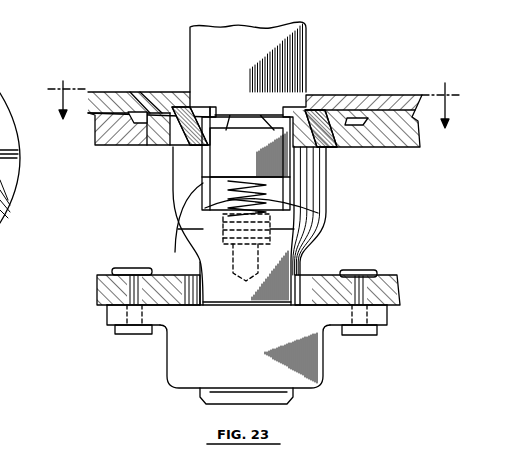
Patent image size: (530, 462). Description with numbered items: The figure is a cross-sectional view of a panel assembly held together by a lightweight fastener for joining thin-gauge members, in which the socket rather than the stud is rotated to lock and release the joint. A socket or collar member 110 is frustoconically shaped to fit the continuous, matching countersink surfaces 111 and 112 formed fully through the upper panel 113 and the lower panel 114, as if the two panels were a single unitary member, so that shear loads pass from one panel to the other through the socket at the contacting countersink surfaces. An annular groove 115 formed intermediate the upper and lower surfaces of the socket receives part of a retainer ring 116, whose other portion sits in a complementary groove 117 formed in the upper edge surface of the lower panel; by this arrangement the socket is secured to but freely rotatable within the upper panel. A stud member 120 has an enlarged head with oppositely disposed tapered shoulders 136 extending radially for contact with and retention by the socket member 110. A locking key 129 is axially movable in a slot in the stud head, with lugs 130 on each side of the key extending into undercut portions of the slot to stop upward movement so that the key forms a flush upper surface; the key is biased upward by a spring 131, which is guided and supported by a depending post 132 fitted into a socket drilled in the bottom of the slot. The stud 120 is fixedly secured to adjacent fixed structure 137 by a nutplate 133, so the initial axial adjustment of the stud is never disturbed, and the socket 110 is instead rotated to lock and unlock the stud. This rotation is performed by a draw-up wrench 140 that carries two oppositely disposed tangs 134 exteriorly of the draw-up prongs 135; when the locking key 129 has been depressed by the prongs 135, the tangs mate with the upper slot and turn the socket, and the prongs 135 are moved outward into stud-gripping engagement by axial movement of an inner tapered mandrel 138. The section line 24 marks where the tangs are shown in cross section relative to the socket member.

The section line 24 is at (50, 79).
The socket member 110 is at (312, 100).
The countersink surface 111 is at (143, 100).
The countersink surface 112 is at (150, 146).
The upper panel 113 is at (110, 100).
The lower panel 114 is at (95, 131).
The annular groove 115 is at (362, 118).
The retainer ring 116 is at (367, 123).
The complementary groove 117 is at (123, 146).
The stud member 120 is at (296, 265).
The locking key 129 is at (246, 169).
The lugs 130 is at (203, 170).
The spring 131 is at (322, 219).
The depending post 132 is at (226, 207).
The nutplate 133 is at (323, 364).
The tangs 134 is at (217, 110).
The draw-up prongs 135 is at (273, 128).
The tapered shoulders 136 is at (176, 140).
The adjacent fixed structure 137 is at (382, 276).
The inner tapered mandrel 138 is at (246, 163).
The draw-up wrench 140 is at (252, 35).